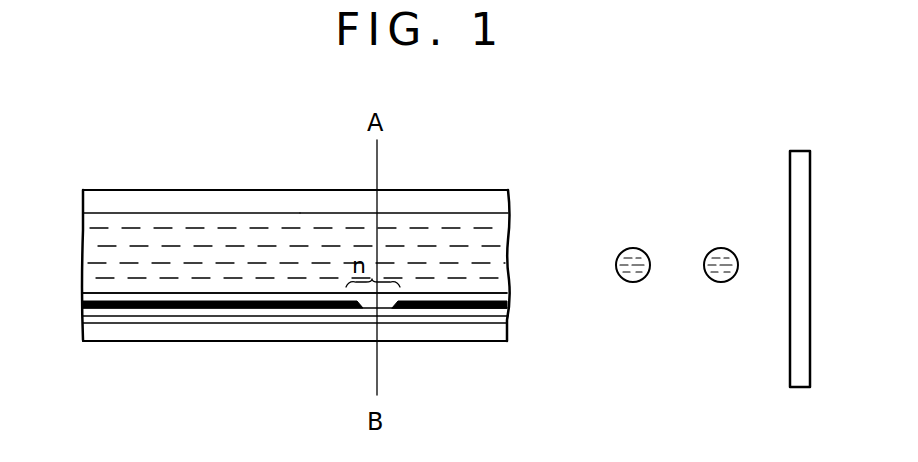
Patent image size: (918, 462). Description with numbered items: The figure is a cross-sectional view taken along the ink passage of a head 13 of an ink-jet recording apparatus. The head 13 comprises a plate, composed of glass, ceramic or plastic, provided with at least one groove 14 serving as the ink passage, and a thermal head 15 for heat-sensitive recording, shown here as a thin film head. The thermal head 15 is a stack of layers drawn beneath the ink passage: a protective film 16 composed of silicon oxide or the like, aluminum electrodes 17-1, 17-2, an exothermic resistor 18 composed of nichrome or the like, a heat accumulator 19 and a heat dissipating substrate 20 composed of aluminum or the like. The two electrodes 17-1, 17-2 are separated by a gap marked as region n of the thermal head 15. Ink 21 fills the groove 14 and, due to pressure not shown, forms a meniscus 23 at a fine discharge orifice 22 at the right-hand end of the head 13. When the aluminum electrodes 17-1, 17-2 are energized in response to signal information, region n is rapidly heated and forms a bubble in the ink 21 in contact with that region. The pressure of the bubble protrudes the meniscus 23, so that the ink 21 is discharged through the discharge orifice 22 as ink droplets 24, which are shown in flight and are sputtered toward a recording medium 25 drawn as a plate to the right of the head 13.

The head 13 is at (193, 190).
The groove 14 is at (290, 213).
The thermal head 15 is at (66, 293).
The protective film 16 is at (130, 297).
The aluminum electrode 17-1 is at (185, 304).
The aluminum electrode 17-2 is at (483, 306).
The exothermic resistor 18 is at (252, 315).
The heat accumulator 19 is at (300, 322).
The heat dissipating substrate 20 is at (435, 340).
The ink 21 is at (110, 217).
The discharge orifice 22 is at (515, 287).
The meniscus 23 is at (512, 258).
The ink droplets 24 is at (737, 232).
The recording medium 25 is at (789, 170).